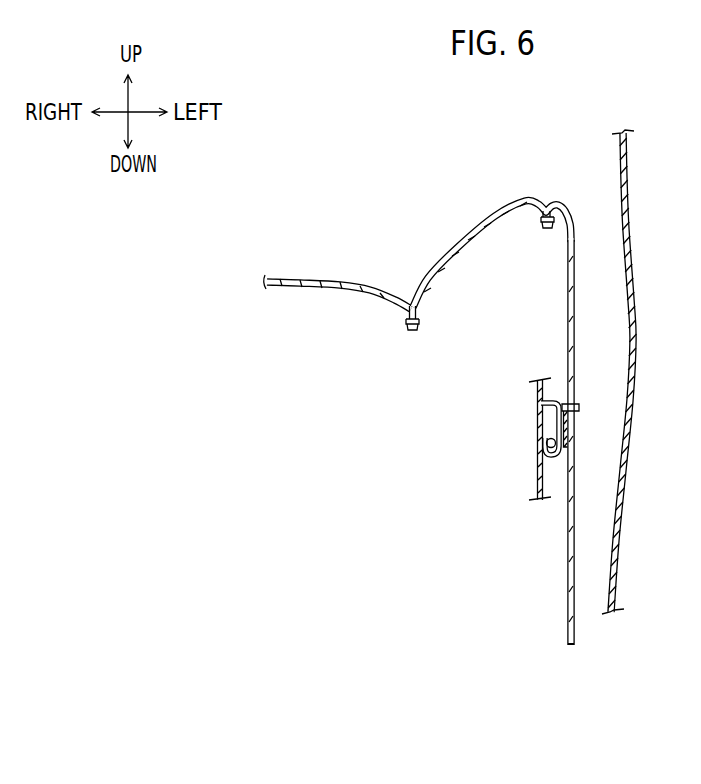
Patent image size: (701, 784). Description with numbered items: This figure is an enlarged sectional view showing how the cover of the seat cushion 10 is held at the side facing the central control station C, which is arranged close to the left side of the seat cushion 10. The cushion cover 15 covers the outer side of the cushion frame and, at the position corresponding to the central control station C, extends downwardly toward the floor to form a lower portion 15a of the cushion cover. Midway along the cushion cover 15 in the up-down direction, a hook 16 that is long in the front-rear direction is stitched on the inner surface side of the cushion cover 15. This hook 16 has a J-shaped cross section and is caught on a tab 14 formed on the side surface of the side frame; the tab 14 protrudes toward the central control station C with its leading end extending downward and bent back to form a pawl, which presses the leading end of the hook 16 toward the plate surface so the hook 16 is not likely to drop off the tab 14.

The seat cushion 10 is at (330, 248).
The cushion cover 15 is at (457, 246).
The lower portion of the cushion cover 15a is at (568, 560).
The tab 14 is at (537, 391).
The hook 16 is at (553, 456).
The central control station C is at (616, 194).